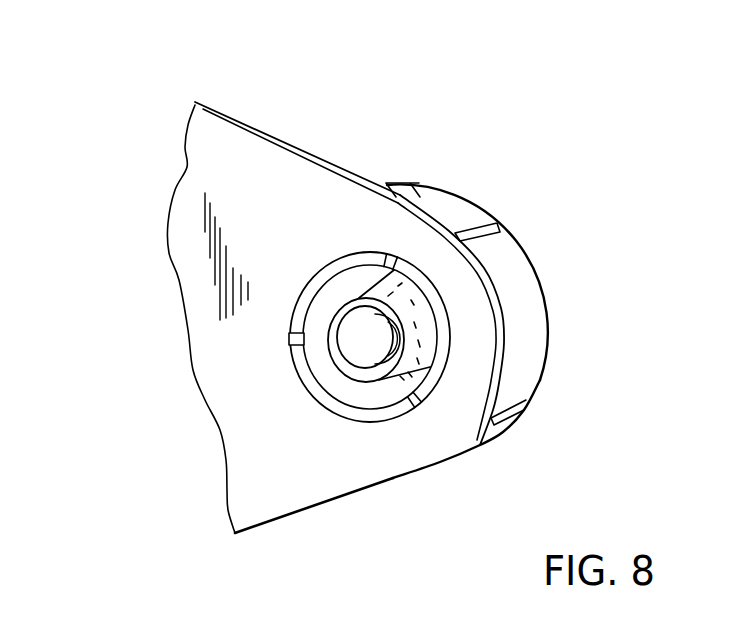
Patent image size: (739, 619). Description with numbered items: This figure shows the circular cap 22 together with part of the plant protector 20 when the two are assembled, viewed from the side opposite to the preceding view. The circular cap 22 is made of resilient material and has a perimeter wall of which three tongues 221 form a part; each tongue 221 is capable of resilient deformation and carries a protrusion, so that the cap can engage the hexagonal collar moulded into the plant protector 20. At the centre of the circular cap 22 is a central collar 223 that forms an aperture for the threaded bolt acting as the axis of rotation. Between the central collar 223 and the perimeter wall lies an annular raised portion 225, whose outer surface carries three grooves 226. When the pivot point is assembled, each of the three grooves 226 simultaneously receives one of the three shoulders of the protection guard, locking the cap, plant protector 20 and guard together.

The plant protector 20 is at (273, 180).
The circular cap 22 is at (539, 284).
The tongues 221 is at (443, 207).
The central collar 223 is at (352, 298).
The annular raised portion 225 is at (320, 394).
The grooves 226 is at (298, 340).